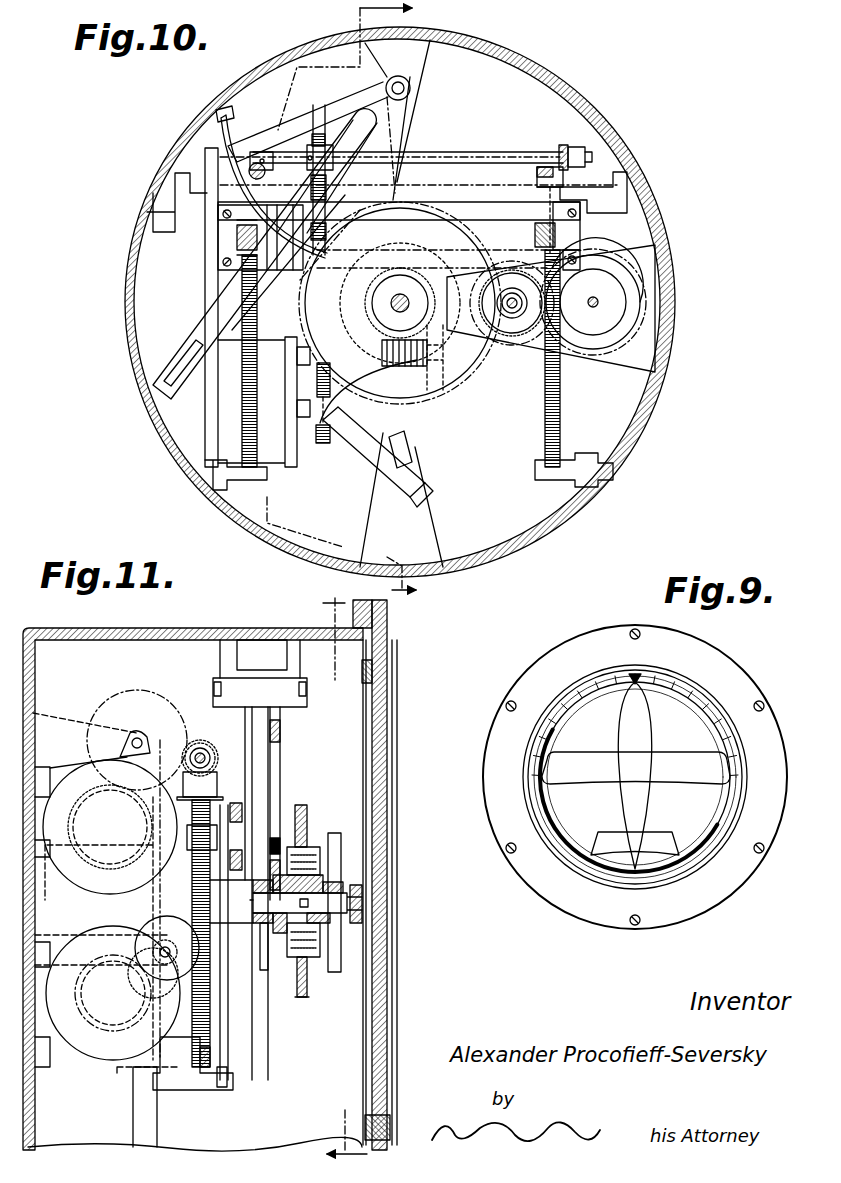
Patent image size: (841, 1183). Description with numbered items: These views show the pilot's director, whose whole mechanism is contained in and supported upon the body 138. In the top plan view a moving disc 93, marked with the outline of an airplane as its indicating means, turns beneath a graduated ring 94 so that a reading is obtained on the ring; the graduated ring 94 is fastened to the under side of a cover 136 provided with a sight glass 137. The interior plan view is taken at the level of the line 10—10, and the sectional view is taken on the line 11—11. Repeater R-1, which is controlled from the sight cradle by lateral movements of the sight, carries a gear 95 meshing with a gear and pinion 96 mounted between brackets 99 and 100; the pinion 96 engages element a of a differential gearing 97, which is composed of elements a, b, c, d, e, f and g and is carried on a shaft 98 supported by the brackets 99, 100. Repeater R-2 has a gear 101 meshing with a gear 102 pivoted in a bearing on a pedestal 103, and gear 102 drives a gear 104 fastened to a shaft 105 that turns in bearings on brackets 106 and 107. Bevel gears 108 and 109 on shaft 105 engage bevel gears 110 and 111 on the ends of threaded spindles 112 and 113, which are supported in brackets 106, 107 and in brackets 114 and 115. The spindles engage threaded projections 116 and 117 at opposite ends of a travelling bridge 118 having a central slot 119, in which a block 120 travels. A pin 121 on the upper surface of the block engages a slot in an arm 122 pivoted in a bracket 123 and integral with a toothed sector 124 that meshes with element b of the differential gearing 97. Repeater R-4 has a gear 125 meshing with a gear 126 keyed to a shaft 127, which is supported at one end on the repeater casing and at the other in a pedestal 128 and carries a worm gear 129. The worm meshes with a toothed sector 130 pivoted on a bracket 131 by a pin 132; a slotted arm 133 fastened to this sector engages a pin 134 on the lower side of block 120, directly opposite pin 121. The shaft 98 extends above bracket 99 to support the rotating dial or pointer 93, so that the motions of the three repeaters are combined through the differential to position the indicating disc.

In FIG. 11, the section line 10 is at (324, 880).
In FIG. 10, the section line 11 is at (355, 300).
In FIG. 11, the moving disc 93 is at (392, 758).
In FIG. 9, the moving disc 93 is at (670, 715).
In FIG. 11, the graduated ring 94 is at (370, 703).
In FIG. 9, the graduated ring 94 is at (646, 676).
In FIG. 10, the gear 95 is at (637, 271).
In FIG. 10, the gear and pinion 96 is at (518, 338).
In FIG. 10, the differential gearing 97 is at (450, 375).
In FIG. 11, the differential gearing 97 is at (307, 950).
In FIG. 10, the shaft 98 is at (386, 299).
In FIG. 11, the shaft 98 is at (272, 928).
In FIG. 10, the bracket 99 is at (628, 362).
In FIG. 11, the bracket 99 is at (337, 842).
In FIG. 10, the bracket 100 is at (522, 342).
In FIG. 11, the bracket 100 is at (280, 972).
In FIG. 10, the gear 101 is at (355, 220).
In FIG. 11, the gear 101 is at (127, 873).
In FIG. 10, the gear 102 is at (327, 216).
In FIG. 11, the gear 102 is at (150, 712).
In FIG. 11, the pedestal 103 is at (62, 738).
In FIG. 10, the gear 104 is at (325, 148).
In FIG. 11, the gear 104 is at (188, 758).
In FIG. 10, the shaft 105 is at (436, 163).
In FIG. 11, the shaft 105 is at (206, 754).
In FIG. 10, the bracket 106 is at (176, 214).
In FIG. 10, the bracket 107 is at (618, 211).
In FIG. 11, the bracket 107 is at (232, 768).
In FIG. 10, the bevel gear 108 is at (262, 145).
In FIG. 10, the bevel gear 109 is at (561, 146).
In FIG. 10, the bevel gear 110 is at (248, 178).
In FIG. 10, the bevel gear 111 is at (565, 178).
In FIG. 10, the threaded spindle 112 is at (225, 309).
In FIG. 10, the threaded spindle 113 is at (561, 416).
In FIG. 11, the threaded spindle 113 is at (210, 913).
In FIG. 10, the bracket 114 is at (218, 488).
In FIG. 10, the bracket 115 is at (577, 484).
In FIG. 11, the bracket 115 is at (231, 1091).
In FIG. 10, the threaded projection 116 is at (207, 293).
In FIG. 10, the threaded projection 117 is at (536, 236).
In FIG. 11, the threaded projection 117 is at (192, 820).
In FIG. 10, the travelling bridge 118 is at (460, 218).
In FIG. 11, the travelling bridge 118 is at (238, 855).
In FIG. 10, the central slot 119 is at (523, 226).
In FIG. 10, the block 120 is at (269, 302).
In FIG. 11, the block 120 is at (243, 755).
In FIG. 10, the pin 121 is at (323, 231).
In FIG. 11, the pin 121 is at (273, 838).
In FIG. 10, the arm 122 is at (165, 360).
In FIG. 11, the arm 122 is at (245, 727).
In FIG. 10, the bracket 123 is at (412, 74).
In FIG. 11, the bracket 123 is at (295, 655).
In FIG. 10, the toothed sector 124 is at (403, 141).
In FIG. 11, the toothed sector 124 is at (297, 731).
In FIG. 10, the gear 125 is at (322, 446).
In FIG. 11, the gear 125 is at (137, 1042).
In FIG. 10, the gear 126 is at (318, 381).
In FIG. 11, the gear 126 is at (152, 953).
In FIG. 10, the shaft 127 is at (412, 400).
In FIG. 10, the pedestal 128 is at (453, 373).
In FIG. 11, the pedestal 128 is at (80, 920).
In FIG. 10, the worm gear 129 is at (383, 348).
In FIG. 10, the toothed sector 130 is at (365, 441).
In FIG. 11, the toothed sector 130 is at (117, 1067).
In FIG. 10, the bracket 131 is at (428, 531).
In FIG. 11, the bracket 131 is at (138, 1127).
In FIG. 10, the pin 132 is at (404, 455).
In FIG. 10, the slotted arm 133 is at (403, 493).
In FIG. 11, the slotted arm 133 is at (222, 985).
In FIG. 11, the pin 134 is at (178, 866).
In FIG. 11, the cover 136 is at (390, 643).
In FIG. 9, the cover 136 is at (573, 648).
In FIG. 11, the sight glass 137 is at (390, 898).
In FIG. 10, the body 138 is at (634, 442).
In FIG. 11, the body 138 is at (150, 631).
In FIG. 10, the repeater R-1 is at (593, 302).
In FIG. 11, the repeater R-1 is at (117, 938).
In FIG. 10, the repeater R-2 is at (225, 258).
In FIG. 11, the repeater R-2 is at (110, 827).
In FIG. 10, the repeater R-4 is at (216, 425).
In FIG. 11, the repeater R-4 is at (113, 993).
In FIG. 11, the differential gearing element a is at (309, 994).
In FIG. 11, the differential gearing element b is at (281, 934).
In FIG. 11, the differential gearing element c is at (287, 903).
In FIG. 11, the differential gearing element d is at (314, 903).
In FIG. 11, the differential gearing element e is at (318, 870).
In FIG. 11, the differential gearing element f is at (301, 848).
In FIG. 11, the differential gearing element g is at (309, 962).